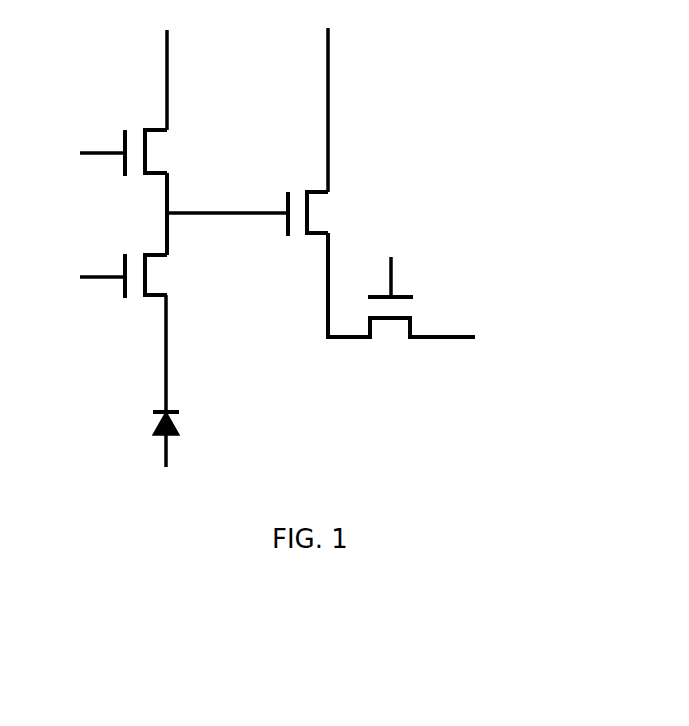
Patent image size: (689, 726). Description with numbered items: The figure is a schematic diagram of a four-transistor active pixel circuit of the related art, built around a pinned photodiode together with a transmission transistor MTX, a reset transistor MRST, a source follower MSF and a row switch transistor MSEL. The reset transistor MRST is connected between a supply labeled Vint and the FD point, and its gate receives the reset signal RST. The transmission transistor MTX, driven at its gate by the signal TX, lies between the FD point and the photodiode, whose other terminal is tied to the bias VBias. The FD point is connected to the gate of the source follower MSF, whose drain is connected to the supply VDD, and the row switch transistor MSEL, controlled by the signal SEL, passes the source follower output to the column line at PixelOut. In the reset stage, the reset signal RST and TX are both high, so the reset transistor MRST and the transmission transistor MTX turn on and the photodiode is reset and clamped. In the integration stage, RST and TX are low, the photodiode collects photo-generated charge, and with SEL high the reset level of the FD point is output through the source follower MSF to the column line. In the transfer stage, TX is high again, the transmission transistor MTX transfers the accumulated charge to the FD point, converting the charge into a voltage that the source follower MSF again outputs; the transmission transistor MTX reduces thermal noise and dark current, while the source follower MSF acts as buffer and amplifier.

The integration voltage supply Vint is at (170, 70).
The reset transistor MRST is at (175, 153).
The reset signal RST is at (82, 154).
The FD point FD is at (227, 214).
The transmission transistor MTX is at (169, 276).
The transmission control signal TX is at (86, 278).
The bias voltage / photodiode VBias is at (166, 394).
The supply voltage VDD is at (333, 101).
The source follower MSF is at (327, 214).
The row switch transistor MSEL is at (401, 305).
The select signal SEL is at (395, 266).
The pixel output PixelOut is at (518, 338).